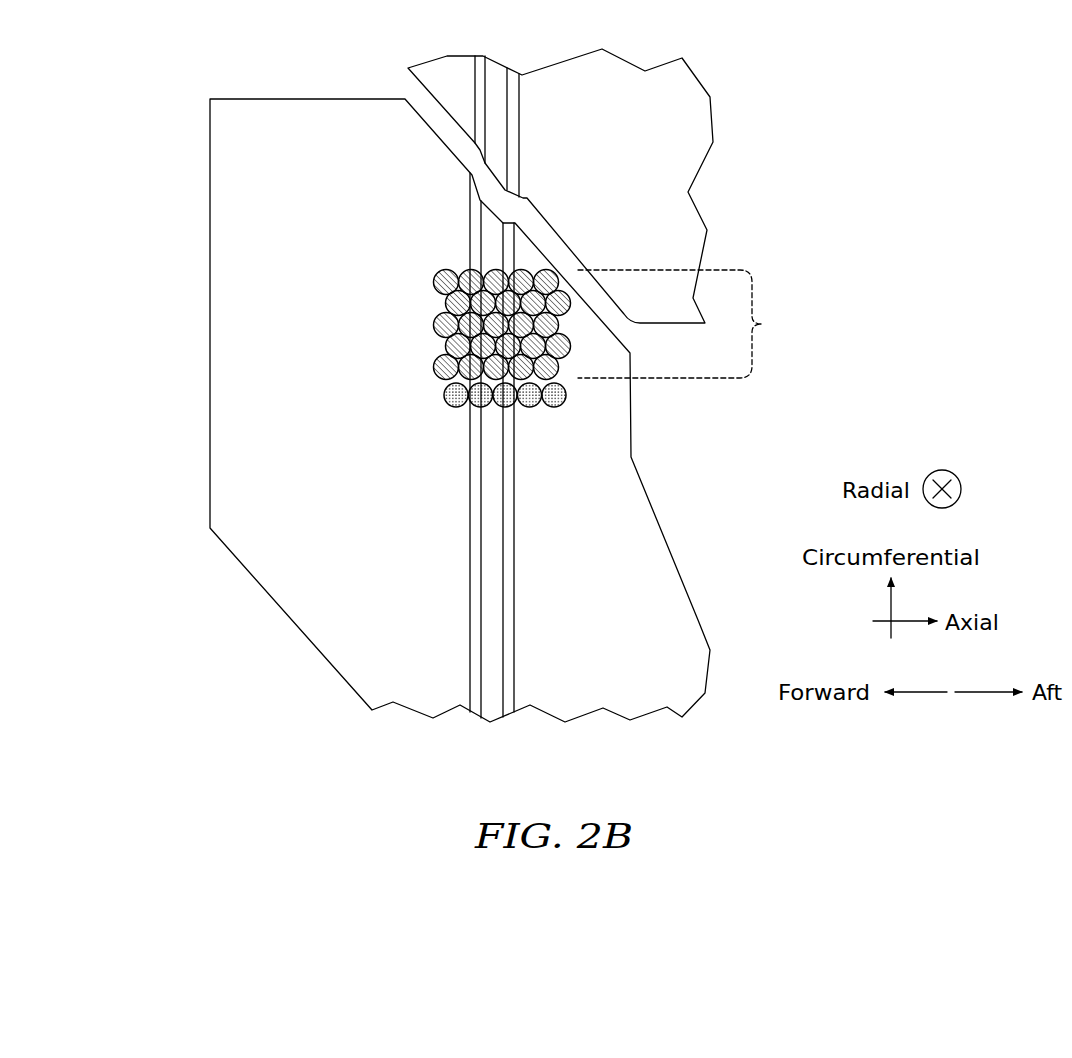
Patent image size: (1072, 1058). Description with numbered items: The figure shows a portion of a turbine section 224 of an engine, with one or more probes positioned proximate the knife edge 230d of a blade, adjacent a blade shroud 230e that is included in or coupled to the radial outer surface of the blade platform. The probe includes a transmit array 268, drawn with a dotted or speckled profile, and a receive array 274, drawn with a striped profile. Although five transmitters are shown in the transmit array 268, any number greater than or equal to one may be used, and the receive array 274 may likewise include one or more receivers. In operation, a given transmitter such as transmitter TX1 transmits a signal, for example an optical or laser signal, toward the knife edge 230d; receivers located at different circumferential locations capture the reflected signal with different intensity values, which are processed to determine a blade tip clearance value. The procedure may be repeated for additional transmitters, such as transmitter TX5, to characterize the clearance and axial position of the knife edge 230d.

The turbine section 224 is at (834, 136).
The knife edge 230d is at (498, 140).
The blade shroud 230e is at (233, 411).
The transmit (TX) array 268 is at (540, 384).
The receive (RX) array 274 is at (695, 324).
The transmitter TX1 is at (450, 398).
The transmitter TX5 is at (560, 400).